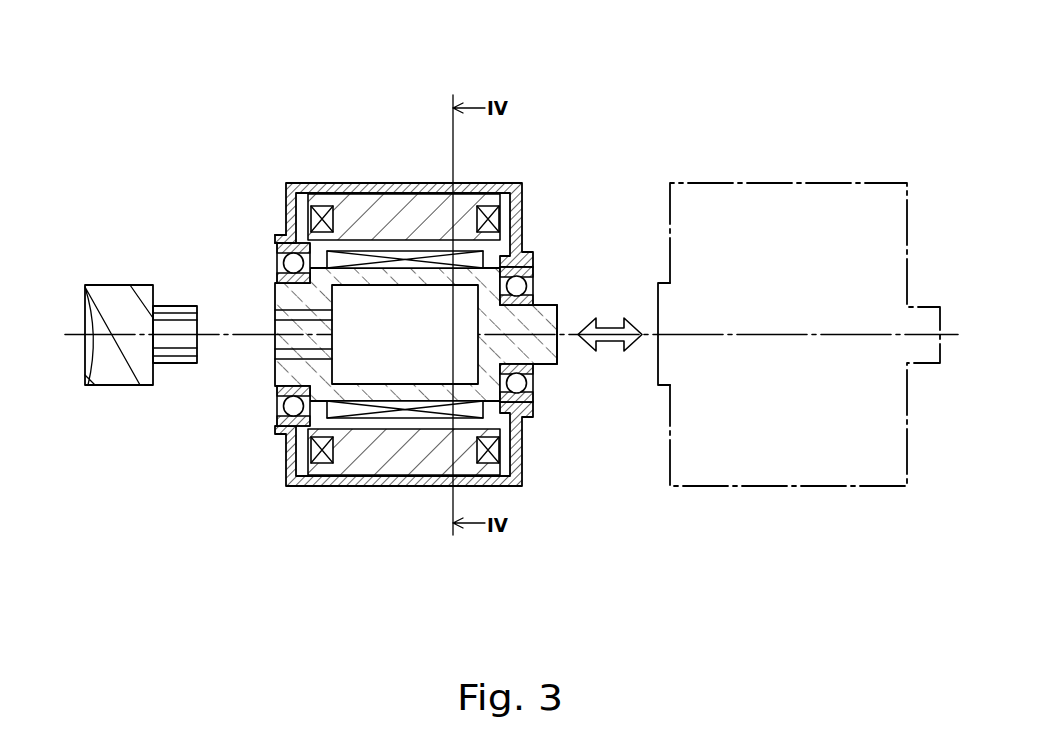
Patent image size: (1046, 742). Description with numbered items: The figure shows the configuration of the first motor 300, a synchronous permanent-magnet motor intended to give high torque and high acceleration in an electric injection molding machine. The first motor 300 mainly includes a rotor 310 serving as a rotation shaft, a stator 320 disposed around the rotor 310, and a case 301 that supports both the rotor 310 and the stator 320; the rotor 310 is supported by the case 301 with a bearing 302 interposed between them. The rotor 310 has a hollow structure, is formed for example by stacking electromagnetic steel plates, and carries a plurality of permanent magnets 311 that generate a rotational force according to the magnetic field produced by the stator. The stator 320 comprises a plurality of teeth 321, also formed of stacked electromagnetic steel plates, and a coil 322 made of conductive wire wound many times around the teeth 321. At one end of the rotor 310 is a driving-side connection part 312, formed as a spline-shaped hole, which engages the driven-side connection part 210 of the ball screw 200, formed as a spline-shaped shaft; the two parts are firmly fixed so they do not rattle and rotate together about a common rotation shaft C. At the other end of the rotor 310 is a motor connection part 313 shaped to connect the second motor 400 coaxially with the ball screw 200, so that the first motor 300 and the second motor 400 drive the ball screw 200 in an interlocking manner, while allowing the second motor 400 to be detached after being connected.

The common rotation shaft C is at (70, 337).
The ball screw 200 is at (88, 285).
The driven-side connection part 210 is at (176, 305).
The first motor 300 is at (406, 249).
The case 301 is at (478, 182).
The bearing 302 is at (278, 263).
The rotor 310 is at (295, 243).
The permanent magnet 311 is at (487, 258).
The driving-side connection part 312 is at (391, 308).
The motor connection part 313 is at (545, 305).
The stator 320 is at (404, 279).
The teeth 321 is at (377, 220).
The coil 322 is at (428, 131).
The second motor 400 is at (765, 183).